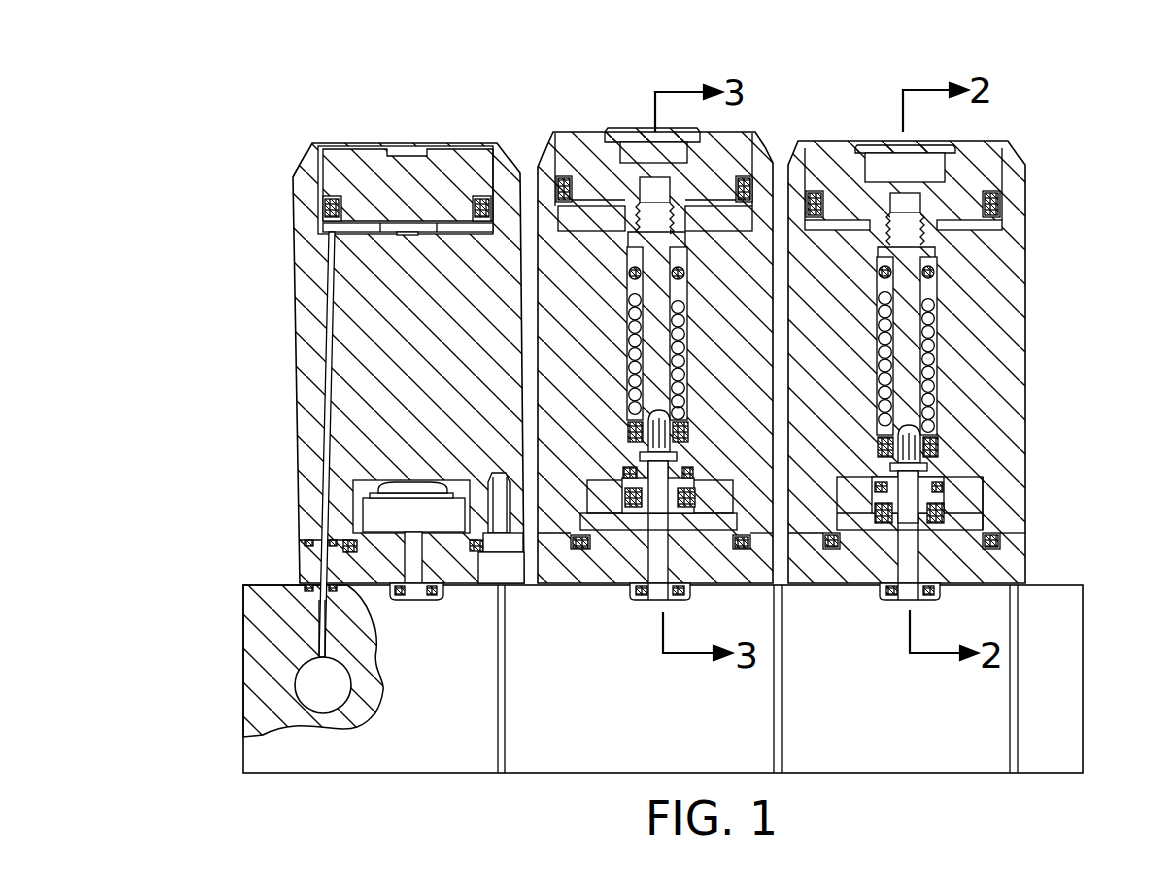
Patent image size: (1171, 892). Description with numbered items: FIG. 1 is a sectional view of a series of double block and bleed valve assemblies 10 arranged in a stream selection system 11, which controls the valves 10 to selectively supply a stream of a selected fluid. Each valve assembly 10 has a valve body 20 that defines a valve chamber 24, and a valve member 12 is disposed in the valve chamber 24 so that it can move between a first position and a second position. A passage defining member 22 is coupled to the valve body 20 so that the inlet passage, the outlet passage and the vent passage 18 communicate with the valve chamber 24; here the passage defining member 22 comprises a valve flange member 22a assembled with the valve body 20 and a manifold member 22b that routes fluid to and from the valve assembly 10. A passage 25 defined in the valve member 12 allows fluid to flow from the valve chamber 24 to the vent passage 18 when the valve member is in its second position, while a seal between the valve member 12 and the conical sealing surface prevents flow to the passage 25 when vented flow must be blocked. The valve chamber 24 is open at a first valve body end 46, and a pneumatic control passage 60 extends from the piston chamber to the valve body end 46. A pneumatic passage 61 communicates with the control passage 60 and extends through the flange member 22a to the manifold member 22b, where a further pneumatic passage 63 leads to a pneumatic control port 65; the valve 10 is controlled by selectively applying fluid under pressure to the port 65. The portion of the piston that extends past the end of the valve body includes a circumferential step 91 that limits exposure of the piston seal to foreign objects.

The valve assembly 10 is at (825, 328).
The stream selection system 11 is at (534, 87).
The valve member 12 is at (645, 255).
The vent passage 18 is at (651, 599).
The valve body 20 is at (995, 320).
The passage defining member 22 is at (1034, 557).
The valve flange member 22a is at (596, 578).
The manifold member 22b is at (597, 760).
The valve chamber 24 is at (985, 472).
The passage 25 is at (687, 457).
The first valve body end 46 is at (345, 552).
The pneumatic control passage 60 is at (300, 395).
The pneumatic passage 61 is at (300, 556).
The pneumatic passage 63 is at (323, 635).
The pneumatic control port 65 is at (323, 685).
The circumferential step 91 is at (568, 133).